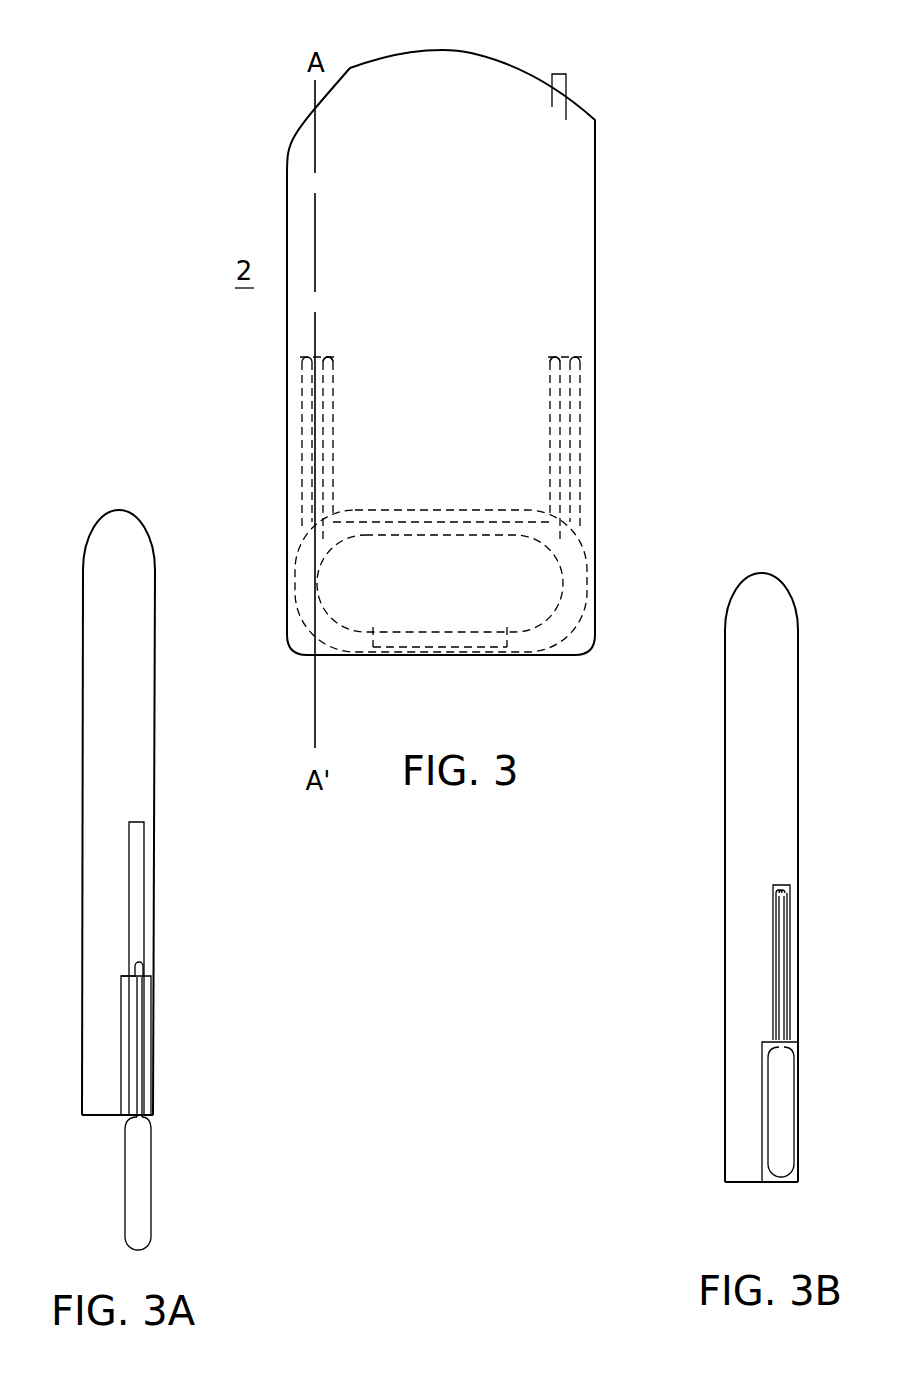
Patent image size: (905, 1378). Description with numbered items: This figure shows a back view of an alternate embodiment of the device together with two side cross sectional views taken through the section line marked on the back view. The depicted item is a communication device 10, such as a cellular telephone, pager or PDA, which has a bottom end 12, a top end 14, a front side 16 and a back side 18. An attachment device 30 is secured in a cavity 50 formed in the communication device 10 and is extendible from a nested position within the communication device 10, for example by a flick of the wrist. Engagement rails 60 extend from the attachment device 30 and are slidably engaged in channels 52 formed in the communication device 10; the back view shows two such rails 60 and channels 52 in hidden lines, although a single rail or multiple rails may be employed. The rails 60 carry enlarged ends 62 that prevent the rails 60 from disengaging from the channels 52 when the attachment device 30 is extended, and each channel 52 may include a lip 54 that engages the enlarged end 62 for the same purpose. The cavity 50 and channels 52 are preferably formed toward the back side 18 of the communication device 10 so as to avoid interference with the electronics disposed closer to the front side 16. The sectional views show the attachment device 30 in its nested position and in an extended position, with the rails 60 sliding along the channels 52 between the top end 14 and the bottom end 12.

In FIG. 3, the communication device 10 is at (488, 360).
In FIG. 3A, the communication device 10 is at (117, 821).
In FIG. 3B, the communication device 10 is at (756, 885).
In FIG. 3, the bottom end 12 is at (538, 655).
In FIG. 3A, the bottom end 12 is at (98, 1118).
In FIG. 3B, the bottom end 12 is at (738, 1184).
In FIG. 3, the top end 14 is at (507, 72).
In FIG. 3A, the top end 14 is at (117, 512).
In FIG. 3B, the top end 14 is at (752, 573).
In FIG. 3, the front side 16 is at (297, 415).
In FIG. 3A, the front side 16 is at (82, 905).
In FIG. 3B, the front side 16 is at (725, 1098).
In FIG. 3, the back side 18 is at (540, 262).
In FIG. 3A, the back side 18 is at (157, 748).
In FIG. 3B, the back side 18 is at (800, 808).
In FIG. 3, the attachment device 30 is at (578, 545).
In FIG. 3A, the attachment device 30 is at (148, 1200).
In FIG. 3B, the attachment device 30 is at (792, 1070).
In FIG. 3, the cavity 50 is at (296, 545).
In FIG. 3A, the cavity 50 is at (145, 1005).
In FIG. 3, the channels 52 is at (340, 405).
In FIG. 3A, the channels 52 is at (137, 830).
In FIG. 3B, the channels 52 is at (773, 905).
In FIG. 3A, the lip 54 is at (128, 978).
In FIG. 3B, the lip 54 is at (792, 1040).
In FIG. 3, the engagement rails 60 is at (318, 432).
In FIG. 3A, the engagement rails 60 is at (138, 1066).
In FIG. 3B, the engagement rails 60 is at (776, 1012).
In FIG. 3, the enlarged ends 62 is at (325, 358).
In FIG. 3A, the enlarged ends 62 is at (138, 965).
In FIG. 3B, the enlarged ends 62 is at (780, 888).